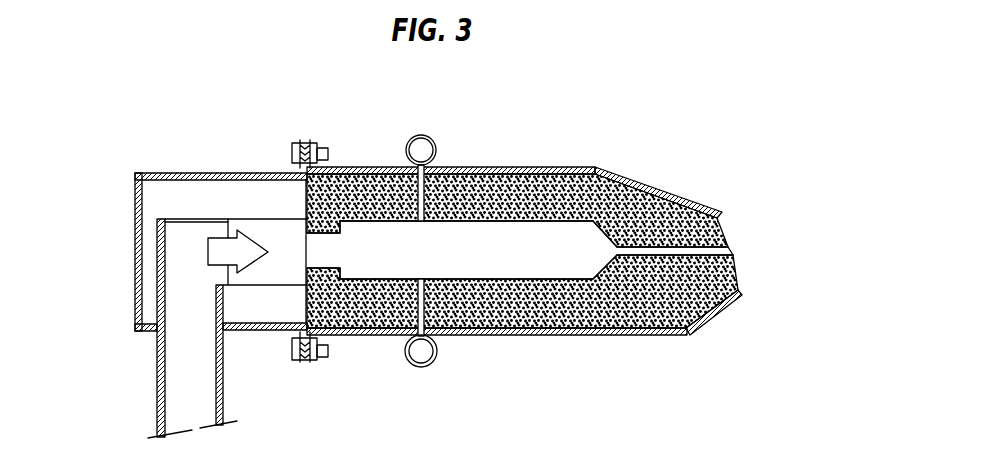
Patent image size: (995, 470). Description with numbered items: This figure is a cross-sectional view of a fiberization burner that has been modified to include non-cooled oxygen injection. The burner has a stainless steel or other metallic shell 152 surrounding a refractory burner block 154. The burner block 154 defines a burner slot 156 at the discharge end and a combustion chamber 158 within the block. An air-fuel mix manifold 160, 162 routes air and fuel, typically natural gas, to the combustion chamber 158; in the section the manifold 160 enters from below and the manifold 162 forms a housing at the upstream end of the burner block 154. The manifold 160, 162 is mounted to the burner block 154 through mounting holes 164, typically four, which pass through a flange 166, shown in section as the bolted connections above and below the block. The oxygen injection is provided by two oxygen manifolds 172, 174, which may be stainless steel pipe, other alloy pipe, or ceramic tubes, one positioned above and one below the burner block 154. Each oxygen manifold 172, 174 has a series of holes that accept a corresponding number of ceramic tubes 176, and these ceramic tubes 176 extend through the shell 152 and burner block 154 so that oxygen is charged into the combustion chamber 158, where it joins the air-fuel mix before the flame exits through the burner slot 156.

The shell 152 is at (648, 188).
The refractory burner block 154 is at (553, 190).
The burner slot 156 is at (730, 251).
The combustion chamber 158 is at (515, 253).
The air-fuel mix manifold 160 is at (157, 377).
The air-fuel mix manifold 162 is at (183, 173).
The mounting holes 164 is at (328, 151).
The flange 166 is at (303, 142).
The oxygen manifold 172 is at (421, 135).
The oxygen manifold 174 is at (425, 368).
The ceramic tubes 176 is at (437, 190).